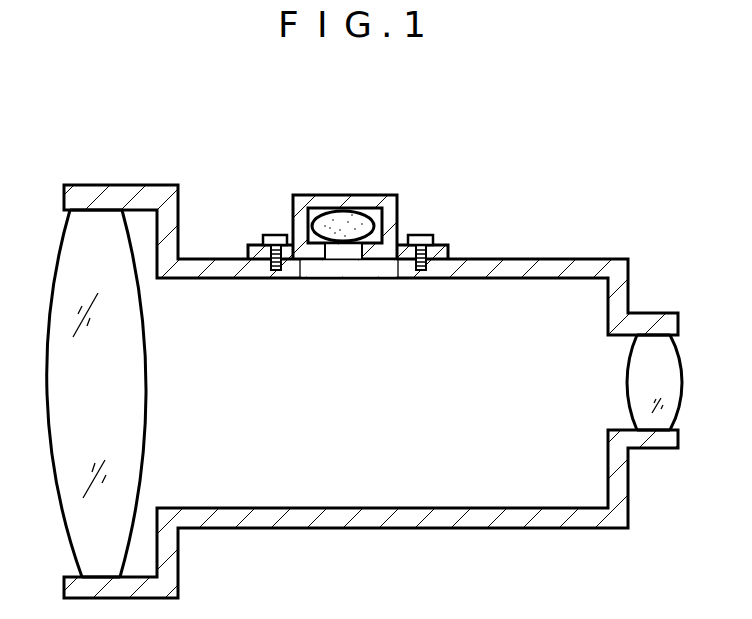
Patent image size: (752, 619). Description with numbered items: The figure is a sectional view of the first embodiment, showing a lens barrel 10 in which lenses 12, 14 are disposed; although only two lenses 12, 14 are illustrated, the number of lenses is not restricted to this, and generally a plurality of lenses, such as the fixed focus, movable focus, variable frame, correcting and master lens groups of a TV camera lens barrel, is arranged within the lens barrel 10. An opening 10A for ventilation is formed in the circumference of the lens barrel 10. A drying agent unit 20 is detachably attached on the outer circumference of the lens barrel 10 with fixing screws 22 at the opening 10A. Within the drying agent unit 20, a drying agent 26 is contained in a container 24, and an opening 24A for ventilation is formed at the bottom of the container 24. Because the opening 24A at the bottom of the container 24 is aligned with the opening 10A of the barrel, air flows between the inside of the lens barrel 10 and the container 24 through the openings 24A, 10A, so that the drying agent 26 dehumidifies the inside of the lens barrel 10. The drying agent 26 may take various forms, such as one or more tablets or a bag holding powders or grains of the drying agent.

The lens barrel 10 is at (548, 520).
The opening 10A is at (383, 282).
The lens 12 is at (82, 530).
The lens 14 is at (680, 413).
The drying agent unit 20 is at (402, 189).
The fixing screws 22 is at (275, 236).
The container 24 is at (305, 205).
The opening 24A is at (323, 262).
The drying agent 26 is at (334, 212).